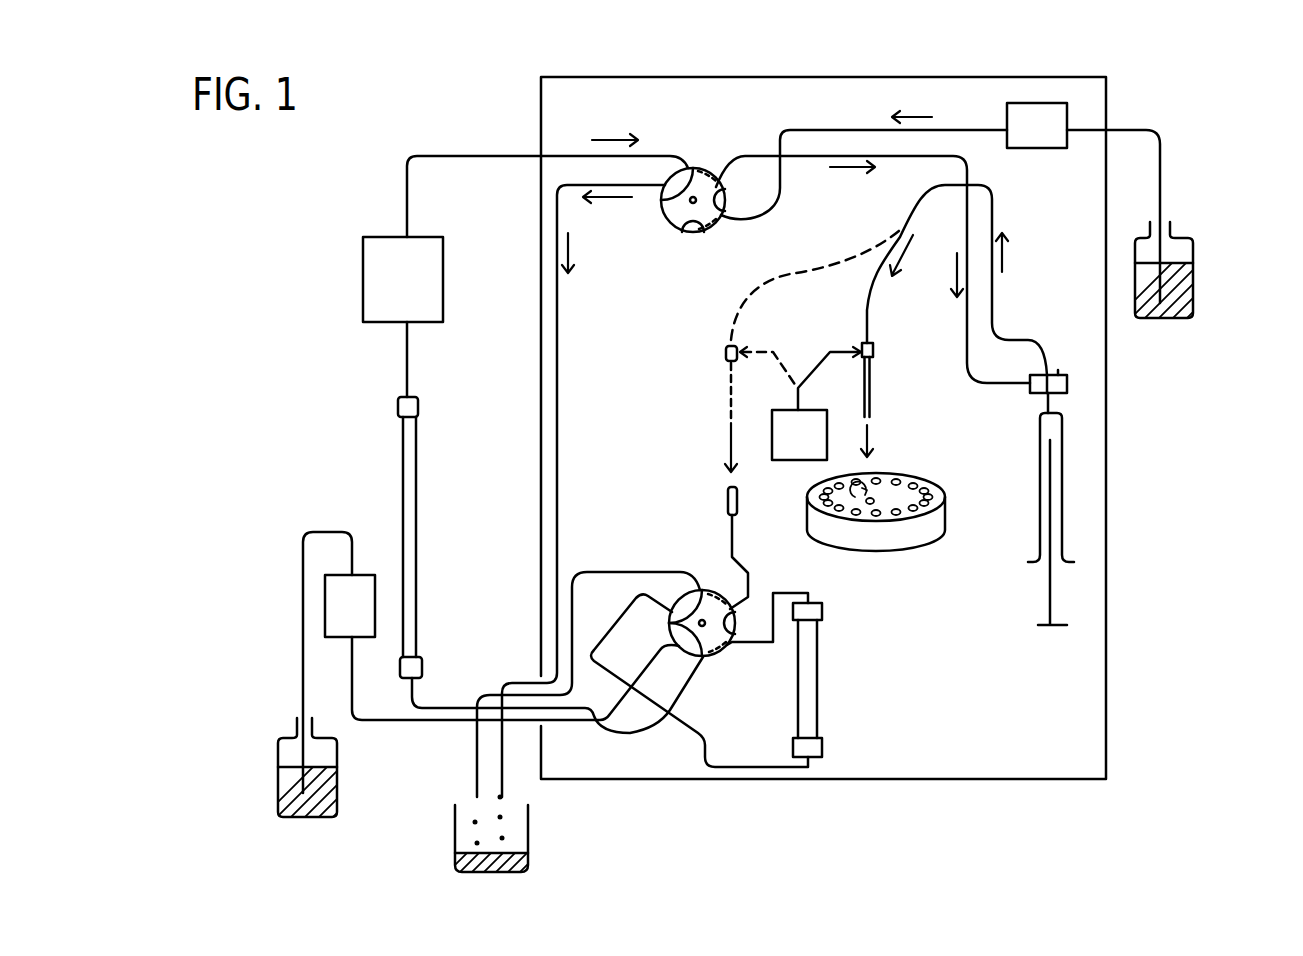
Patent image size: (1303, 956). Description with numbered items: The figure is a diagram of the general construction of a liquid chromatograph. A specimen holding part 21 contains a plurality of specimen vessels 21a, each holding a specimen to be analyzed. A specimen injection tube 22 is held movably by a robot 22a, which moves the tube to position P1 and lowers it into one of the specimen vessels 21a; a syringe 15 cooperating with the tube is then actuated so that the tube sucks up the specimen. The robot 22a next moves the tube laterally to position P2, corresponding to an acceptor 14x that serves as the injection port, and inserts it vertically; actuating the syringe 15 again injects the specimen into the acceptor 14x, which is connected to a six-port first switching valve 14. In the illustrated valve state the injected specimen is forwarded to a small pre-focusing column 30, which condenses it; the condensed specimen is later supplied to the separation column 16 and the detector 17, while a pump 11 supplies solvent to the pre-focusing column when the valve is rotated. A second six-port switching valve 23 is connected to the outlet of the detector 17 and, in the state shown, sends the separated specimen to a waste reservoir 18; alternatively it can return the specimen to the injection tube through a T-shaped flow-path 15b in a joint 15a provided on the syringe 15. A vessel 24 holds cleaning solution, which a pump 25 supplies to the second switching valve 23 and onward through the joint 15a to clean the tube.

The pump 11 is at (325, 615).
The first switching valve 14 is at (713, 590).
The acceptor 14x is at (727, 503).
The syringe 15 is at (1062, 473).
The joint 15a is at (1067, 382).
The flow-path 15b is at (1058, 370).
The separation column 16 is at (417, 485).
The detector 17 is at (443, 263).
The waste reservoir 18 is at (528, 835).
The specimen holding part 21 is at (905, 550).
The specimen vessels 21a is at (922, 485).
The specimen injection tube 22 is at (870, 378).
The robot 22a is at (785, 460).
The second switching valve 23 is at (665, 204).
The vessel 24 is at (1193, 290).
The pump 25 is at (1035, 147).
The pre-focusing column 30 is at (817, 668).
The position P1 is at (888, 338).
The position P2 is at (710, 339).